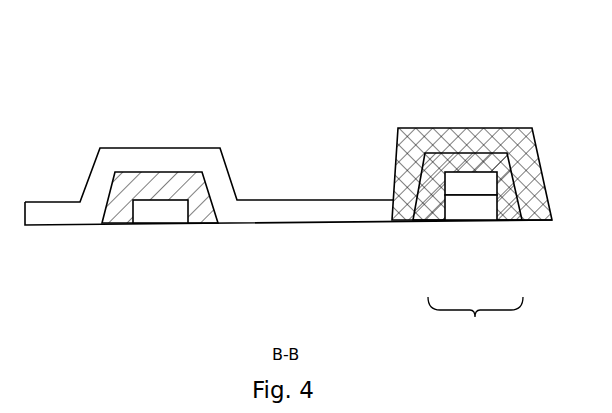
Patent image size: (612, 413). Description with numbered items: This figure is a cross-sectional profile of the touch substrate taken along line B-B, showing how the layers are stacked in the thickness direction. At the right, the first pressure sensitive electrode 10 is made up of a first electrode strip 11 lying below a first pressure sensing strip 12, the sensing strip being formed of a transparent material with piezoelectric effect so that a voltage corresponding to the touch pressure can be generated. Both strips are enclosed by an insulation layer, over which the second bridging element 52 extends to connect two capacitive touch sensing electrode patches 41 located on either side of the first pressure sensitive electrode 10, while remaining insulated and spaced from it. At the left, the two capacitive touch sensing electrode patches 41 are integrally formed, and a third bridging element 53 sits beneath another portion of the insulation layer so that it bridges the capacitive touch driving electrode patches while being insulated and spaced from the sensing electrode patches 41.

The first pressure sensitive electrode 10 is at (475, 321).
The first electrode strip 11 is at (465, 207).
The first pressure sensing strip 12 is at (475, 182).
The capacitive touch sensing electrode patch 41 is at (65, 210).
The second bridging element 52 is at (450, 140).
The third bridging element 53 is at (160, 213).